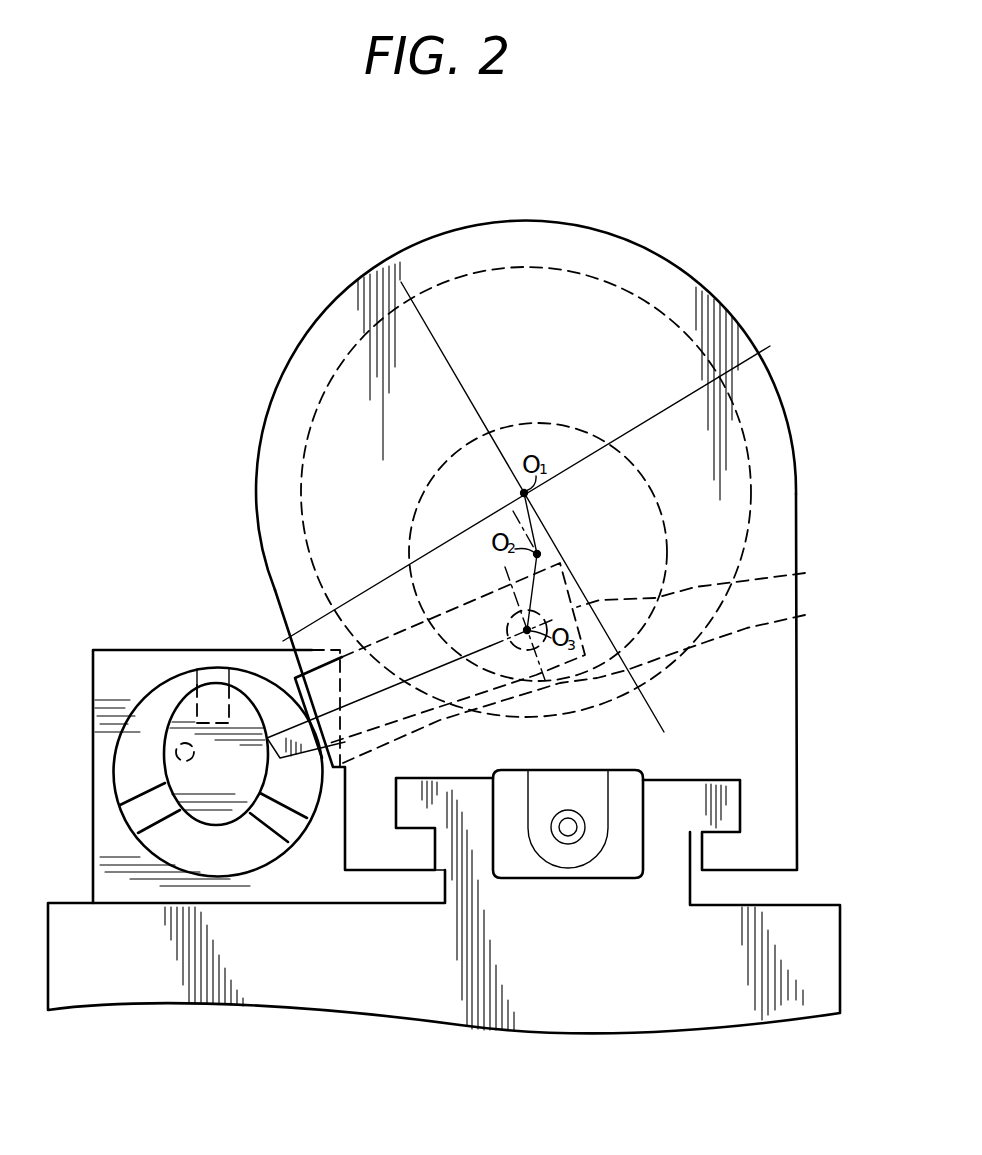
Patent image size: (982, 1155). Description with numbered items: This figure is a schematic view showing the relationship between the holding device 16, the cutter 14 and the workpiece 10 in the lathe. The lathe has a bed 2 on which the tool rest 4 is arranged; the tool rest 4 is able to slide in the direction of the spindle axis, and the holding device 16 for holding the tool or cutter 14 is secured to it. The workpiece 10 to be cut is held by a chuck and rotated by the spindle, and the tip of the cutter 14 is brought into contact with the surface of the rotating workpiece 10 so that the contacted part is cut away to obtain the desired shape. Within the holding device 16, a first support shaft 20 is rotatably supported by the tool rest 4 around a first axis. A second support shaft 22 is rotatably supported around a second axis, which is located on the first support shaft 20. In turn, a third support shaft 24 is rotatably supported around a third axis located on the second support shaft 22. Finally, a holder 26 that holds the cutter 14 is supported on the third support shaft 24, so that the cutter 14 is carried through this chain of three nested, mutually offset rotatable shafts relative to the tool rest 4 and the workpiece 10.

The bed 2 is at (807, 957).
The tool rest 4 is at (588, 251).
The workpiece 10 is at (228, 790).
The cutter 14 is at (343, 815).
The holding device 16 is at (492, 516).
The first support shaft 20 is at (638, 323).
The second support shaft 22 is at (657, 527).
The third support shaft 24 is at (711, 581).
The holder 26 is at (594, 680).